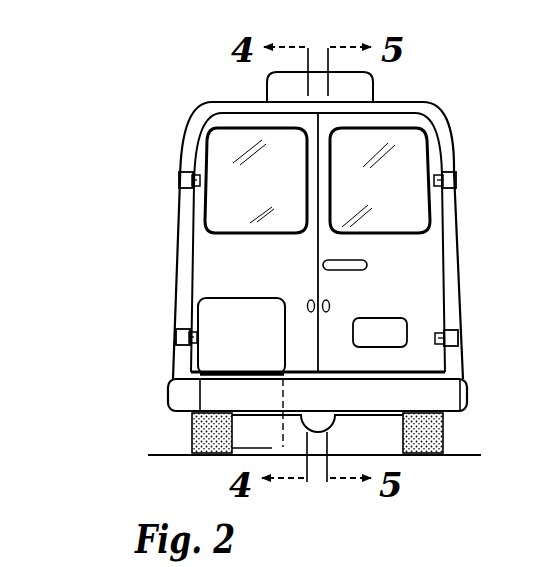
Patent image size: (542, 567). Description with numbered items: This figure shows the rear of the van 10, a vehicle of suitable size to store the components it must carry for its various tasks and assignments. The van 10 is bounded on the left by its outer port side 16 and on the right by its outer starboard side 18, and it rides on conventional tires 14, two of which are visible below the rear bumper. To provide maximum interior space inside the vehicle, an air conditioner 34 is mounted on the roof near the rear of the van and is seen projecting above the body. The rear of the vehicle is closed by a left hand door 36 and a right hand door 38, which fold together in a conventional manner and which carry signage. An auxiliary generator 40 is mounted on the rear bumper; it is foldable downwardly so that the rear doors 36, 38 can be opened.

The van 10 is at (470, 226).
The tires 14 is at (194, 432).
The port side 16 is at (178, 203).
The starboard side 18 is at (456, 173).
The air conditioner 34 is at (268, 88).
The left hand door 36 is at (208, 283).
The right hand door 38 is at (418, 292).
The auxiliary generator 40 is at (256, 346).